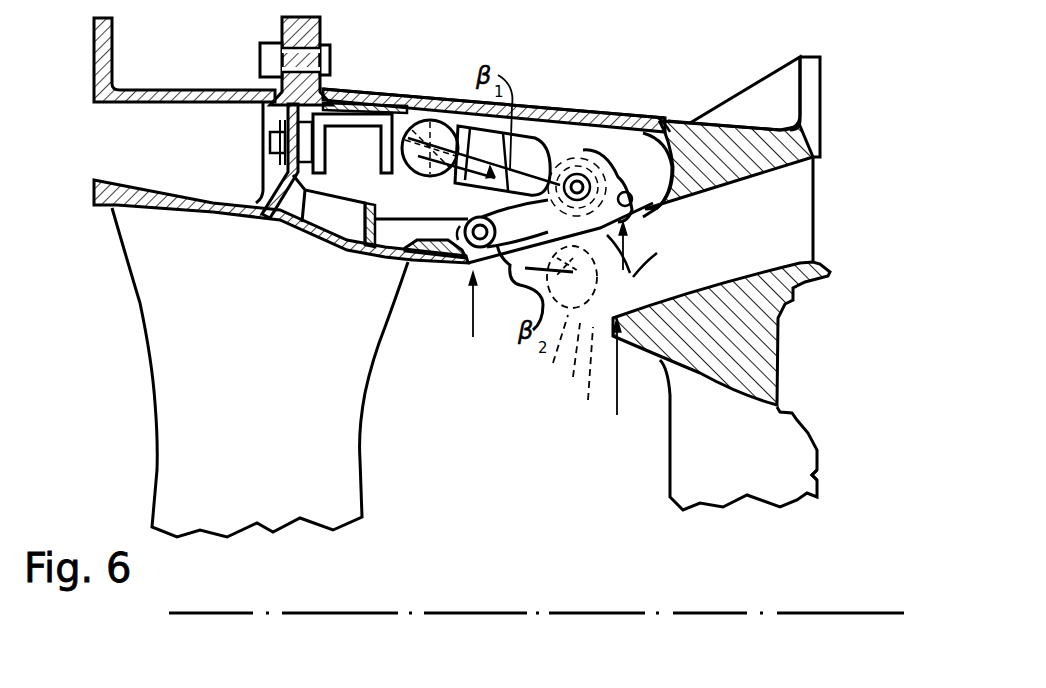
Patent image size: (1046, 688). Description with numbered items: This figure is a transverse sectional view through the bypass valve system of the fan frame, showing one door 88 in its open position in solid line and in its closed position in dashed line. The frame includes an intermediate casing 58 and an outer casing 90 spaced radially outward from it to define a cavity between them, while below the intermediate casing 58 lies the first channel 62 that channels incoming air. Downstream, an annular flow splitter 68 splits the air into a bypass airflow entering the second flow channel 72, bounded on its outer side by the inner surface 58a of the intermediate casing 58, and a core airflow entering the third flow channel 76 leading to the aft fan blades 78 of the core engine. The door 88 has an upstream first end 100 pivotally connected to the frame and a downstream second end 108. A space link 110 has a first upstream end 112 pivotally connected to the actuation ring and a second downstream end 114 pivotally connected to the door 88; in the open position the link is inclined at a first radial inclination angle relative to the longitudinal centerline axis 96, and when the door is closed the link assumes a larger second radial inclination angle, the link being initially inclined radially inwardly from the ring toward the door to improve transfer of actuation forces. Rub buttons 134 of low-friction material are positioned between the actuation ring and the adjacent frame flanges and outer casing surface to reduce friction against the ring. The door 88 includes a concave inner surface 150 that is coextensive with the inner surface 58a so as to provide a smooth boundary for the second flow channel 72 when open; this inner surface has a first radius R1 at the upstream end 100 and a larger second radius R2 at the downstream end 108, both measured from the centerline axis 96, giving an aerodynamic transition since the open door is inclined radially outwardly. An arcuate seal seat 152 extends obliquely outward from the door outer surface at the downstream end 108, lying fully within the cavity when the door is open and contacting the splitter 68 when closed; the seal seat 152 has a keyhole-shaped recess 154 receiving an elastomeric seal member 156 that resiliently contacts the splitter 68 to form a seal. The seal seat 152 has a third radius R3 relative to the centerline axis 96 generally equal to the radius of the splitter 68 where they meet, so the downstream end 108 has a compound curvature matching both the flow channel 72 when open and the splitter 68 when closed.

The intermediate casing 58 is at (216, 202).
The inner surface of the intermediate casing 58a is at (330, 248).
The first channel 62 is at (418, 424).
The annular flow splitter 68 is at (776, 355).
The second flow channel 72 is at (768, 242).
The third flow channel 76 is at (746, 458).
The blades 78 is at (812, 474).
The door 88 is at (495, 247).
The outer casing 90 is at (623, 108).
The longitudinal centerline axis 96 is at (511, 613).
The door upstream first end 100 is at (482, 267).
The door downstream second end 108 is at (568, 240).
The space link 110 is at (523, 126).
The link first upstream end 112 is at (433, 120).
The link second downstream end 114 is at (570, 180).
The rub buttons 134 is at (373, 90).
The door inner surface 150 is at (595, 319).
The seal seat 152 is at (710, 215).
The keyhole-shaped recess 154 is at (583, 377).
The elastomeric seal member 156 is at (668, 121).
The first radius R1 is at (468, 319).
The second radius R2 is at (630, 252).
The third radius R3 is at (619, 376).